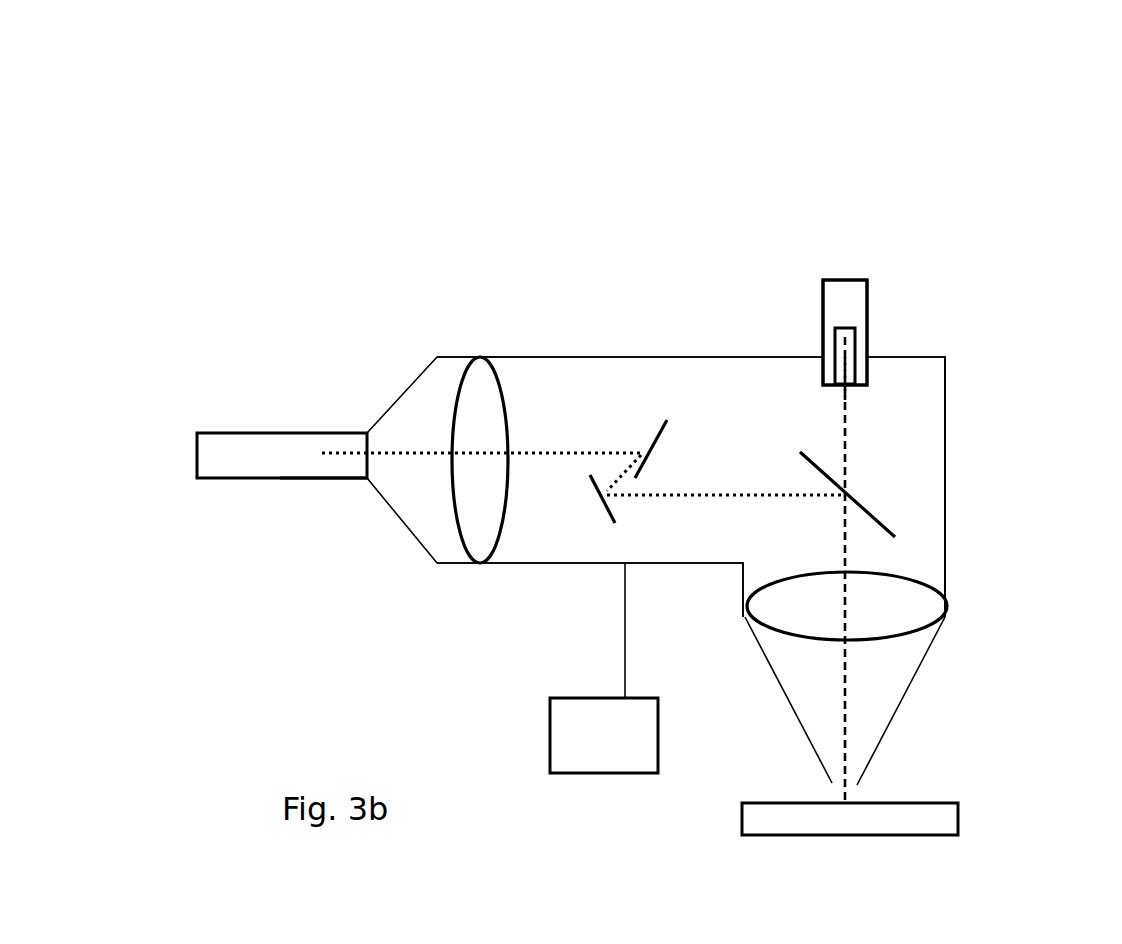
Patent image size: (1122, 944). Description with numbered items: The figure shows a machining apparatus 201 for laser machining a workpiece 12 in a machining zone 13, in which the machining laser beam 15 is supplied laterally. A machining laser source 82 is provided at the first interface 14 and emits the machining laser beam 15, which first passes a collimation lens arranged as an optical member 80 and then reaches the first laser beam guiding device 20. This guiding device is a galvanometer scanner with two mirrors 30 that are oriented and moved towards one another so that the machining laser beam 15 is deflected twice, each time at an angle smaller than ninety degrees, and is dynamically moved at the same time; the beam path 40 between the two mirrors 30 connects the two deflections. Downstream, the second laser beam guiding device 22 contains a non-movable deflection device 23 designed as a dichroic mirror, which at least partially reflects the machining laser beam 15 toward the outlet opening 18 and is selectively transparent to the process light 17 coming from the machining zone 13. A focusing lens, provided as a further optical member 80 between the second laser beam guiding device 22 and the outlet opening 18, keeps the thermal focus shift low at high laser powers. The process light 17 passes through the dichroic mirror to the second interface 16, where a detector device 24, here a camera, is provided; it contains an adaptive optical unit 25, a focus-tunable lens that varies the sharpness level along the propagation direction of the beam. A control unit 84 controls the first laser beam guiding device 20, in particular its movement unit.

The machining apparatus 201 is at (388, 142).
The first interface 14 is at (326, 427).
The machining laser source 82 is at (282, 487).
The machining laser beam 15 is at (400, 457).
The optical member 80 is at (452, 420).
The first laser beam guiding device 20 is at (591, 407).
The mirrors 30 is at (667, 420).
The beam path between mirrors 40 is at (632, 512).
The second laser beam guiding device 22 is at (902, 467).
The deflection device 23 is at (895, 535).
The process light 17 is at (853, 400).
The second interface 16 is at (879, 318).
The detector device 24 is at (820, 290).
The adaptive optical unit 25 is at (830, 352).
The outlet opening 18 is at (823, 783).
The machining zone 13 is at (862, 796).
The workpiece 12 is at (960, 813).
The control unit 84 is at (548, 745).